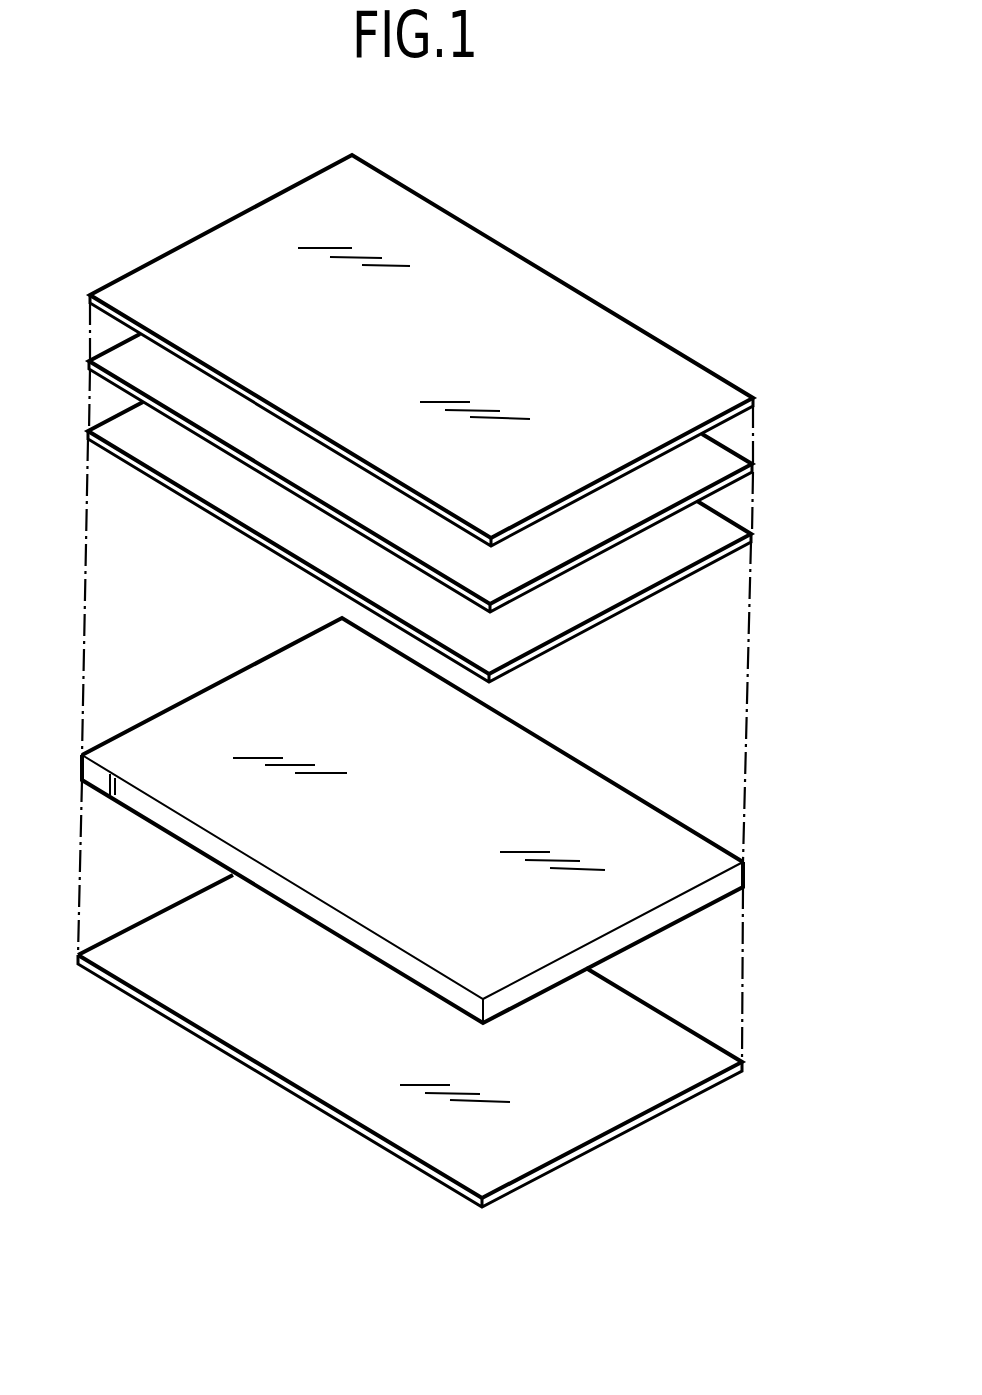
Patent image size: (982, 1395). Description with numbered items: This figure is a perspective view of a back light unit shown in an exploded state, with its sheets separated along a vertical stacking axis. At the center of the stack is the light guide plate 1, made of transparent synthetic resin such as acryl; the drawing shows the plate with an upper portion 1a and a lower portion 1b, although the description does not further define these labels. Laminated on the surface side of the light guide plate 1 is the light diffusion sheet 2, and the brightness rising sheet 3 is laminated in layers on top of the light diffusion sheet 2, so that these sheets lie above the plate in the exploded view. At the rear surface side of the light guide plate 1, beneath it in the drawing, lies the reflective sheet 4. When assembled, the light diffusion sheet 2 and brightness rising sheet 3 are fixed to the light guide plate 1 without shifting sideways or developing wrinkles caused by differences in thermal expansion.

The light guide plate 1 is at (462, 800).
The upper layer of substrate 1a is at (213, 685).
The lower layer of substrate 1b is at (688, 902).
The light diffusion sheet 2 is at (700, 545).
The brightness rising sheet 3 is at (578, 318).
The reflective sheet 4 is at (620, 1100).